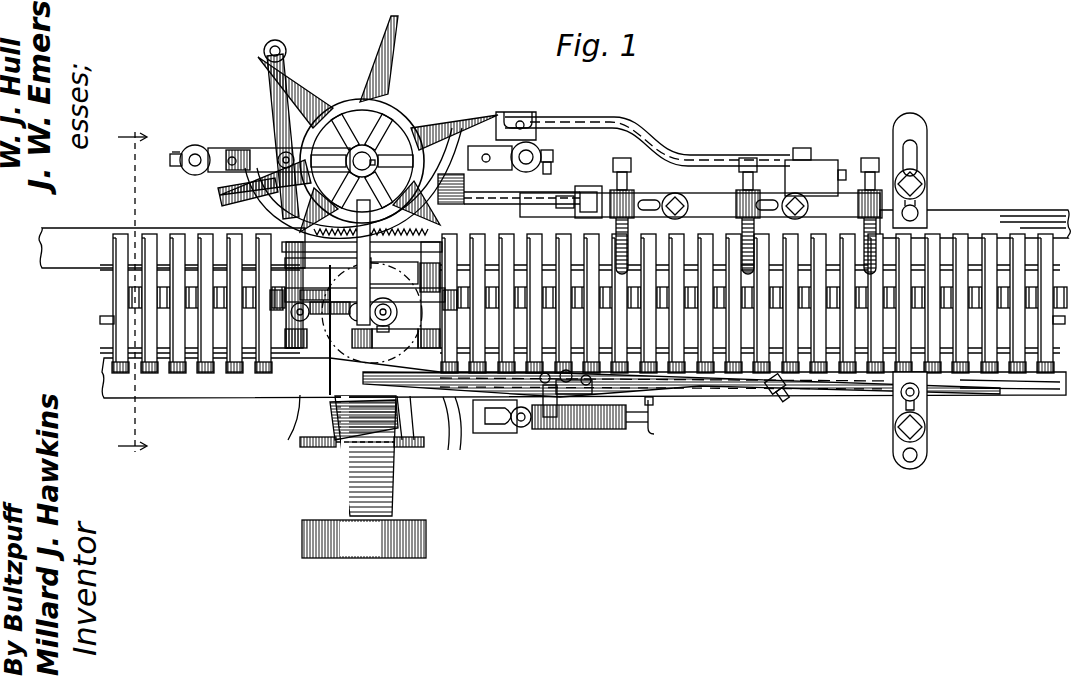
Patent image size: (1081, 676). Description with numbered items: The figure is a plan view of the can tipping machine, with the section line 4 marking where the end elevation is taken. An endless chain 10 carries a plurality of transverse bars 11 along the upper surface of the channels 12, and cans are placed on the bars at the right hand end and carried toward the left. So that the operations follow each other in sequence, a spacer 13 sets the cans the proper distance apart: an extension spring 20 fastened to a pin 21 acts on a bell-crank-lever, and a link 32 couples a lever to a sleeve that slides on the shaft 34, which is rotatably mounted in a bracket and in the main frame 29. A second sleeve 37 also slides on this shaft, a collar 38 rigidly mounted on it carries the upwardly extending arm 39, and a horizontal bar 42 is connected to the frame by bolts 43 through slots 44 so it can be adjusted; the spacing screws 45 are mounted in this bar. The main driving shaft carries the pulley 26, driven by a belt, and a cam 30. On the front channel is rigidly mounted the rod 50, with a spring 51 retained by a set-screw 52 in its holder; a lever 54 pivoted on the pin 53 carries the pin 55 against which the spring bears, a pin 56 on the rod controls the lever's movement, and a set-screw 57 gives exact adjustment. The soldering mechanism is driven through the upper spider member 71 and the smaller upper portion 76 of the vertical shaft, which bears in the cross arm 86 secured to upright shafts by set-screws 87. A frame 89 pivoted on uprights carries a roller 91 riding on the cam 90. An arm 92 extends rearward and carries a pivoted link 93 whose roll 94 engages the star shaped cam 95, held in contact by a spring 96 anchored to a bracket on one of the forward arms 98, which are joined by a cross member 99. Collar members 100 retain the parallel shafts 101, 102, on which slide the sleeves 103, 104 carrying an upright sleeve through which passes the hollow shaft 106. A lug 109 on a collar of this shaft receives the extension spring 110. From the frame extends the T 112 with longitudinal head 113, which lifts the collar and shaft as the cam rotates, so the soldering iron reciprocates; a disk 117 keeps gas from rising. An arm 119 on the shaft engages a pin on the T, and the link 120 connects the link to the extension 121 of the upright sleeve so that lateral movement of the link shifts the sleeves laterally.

The section line 4— 4 is at (132, 292).
The endless chain 10 is at (106, 318).
The transverse bars 11 is at (113, 286).
The channels 12 is at (90, 236).
The spacer 13 is at (706, 200).
The extension spring 20 is at (610, 432).
The pin 21 is at (652, 436).
The pulley 26 is at (342, 556).
The main frame 29 is at (365, 456).
The cam 30 is at (318, 447).
The link 32 is at (604, 120).
The shaft 34 is at (522, 190).
The sleeve 37 is at (733, 291).
The collar 38 is at (554, 196).
The arm 39 is at (586, 190).
The horizontal bar 42 is at (735, 175).
The bolts 43 is at (676, 196).
The slots 44 is at (648, 200).
The spacing screws 45 is at (612, 166).
The rod 50 is at (1035, 386).
The spring 51 is at (696, 392).
The set-screw 52 is at (782, 396).
The pin 53 is at (570, 432).
The lever 54 is at (465, 425).
The pin 55 is at (590, 396).
The pin 56 is at (520, 428).
The set-screw 57 is at (550, 418).
The upper spider member 71 is at (377, 58).
The upper portion of shaft 76 is at (366, 152).
The cross arm 86 is at (240, 150).
The set-screws 87 is at (174, 168).
The frame 89 is at (235, 188).
The cam 90 is at (332, 102).
The roller 91 is at (371, 256).
The arm 92 is at (270, 62).
The link 93 is at (270, 100).
The roll 94 is at (284, 150).
The star shaped cam 95 is at (360, 98).
The spring 96 is at (450, 174).
The arms 98 is at (262, 214).
The cross member 99 is at (363, 302).
The collar members 100 is at (315, 320).
The shaft 101 is at (300, 335).
The shaft 102 is at (340, 318).
The sleeve 103 is at (404, 277).
The sleeve 104 is at (445, 420).
The shaft 106 is at (396, 308).
The lug 109 is at (385, 338).
The extension spring 110 is at (402, 318).
The T 112 is at (400, 440).
The longitudinal head 113 is at (300, 400).
The disk 117 is at (364, 421).
The arm 119 is at (360, 310).
The link 120 is at (300, 322).
The extension 121 is at (416, 440).